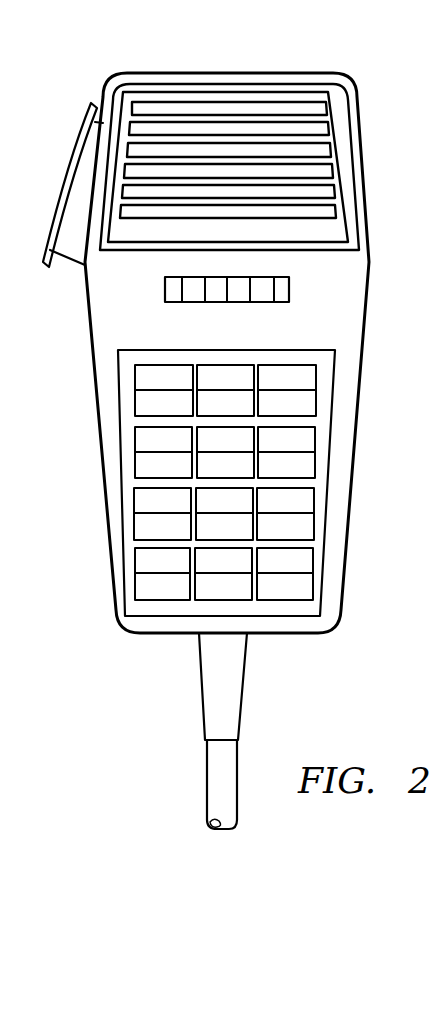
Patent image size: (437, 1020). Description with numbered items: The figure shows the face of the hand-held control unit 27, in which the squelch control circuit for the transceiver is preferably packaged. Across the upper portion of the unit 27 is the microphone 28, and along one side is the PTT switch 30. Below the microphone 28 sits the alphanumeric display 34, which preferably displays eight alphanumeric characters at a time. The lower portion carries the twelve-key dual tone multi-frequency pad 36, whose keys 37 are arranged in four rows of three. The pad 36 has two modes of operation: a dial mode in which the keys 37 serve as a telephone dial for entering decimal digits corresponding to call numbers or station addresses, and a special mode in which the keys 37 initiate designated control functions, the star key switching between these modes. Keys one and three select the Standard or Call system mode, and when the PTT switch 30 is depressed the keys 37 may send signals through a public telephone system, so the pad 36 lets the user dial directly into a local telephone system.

The hand-held control unit 27 is at (362, 66).
The microphone 28 is at (307, 156).
The PTT switch 30 is at (63, 178).
The alphanumeric display 34 is at (289, 290).
The 12-key dual tone multi-frequency pad 36 is at (220, 483).
The keys 37 is at (143, 463).